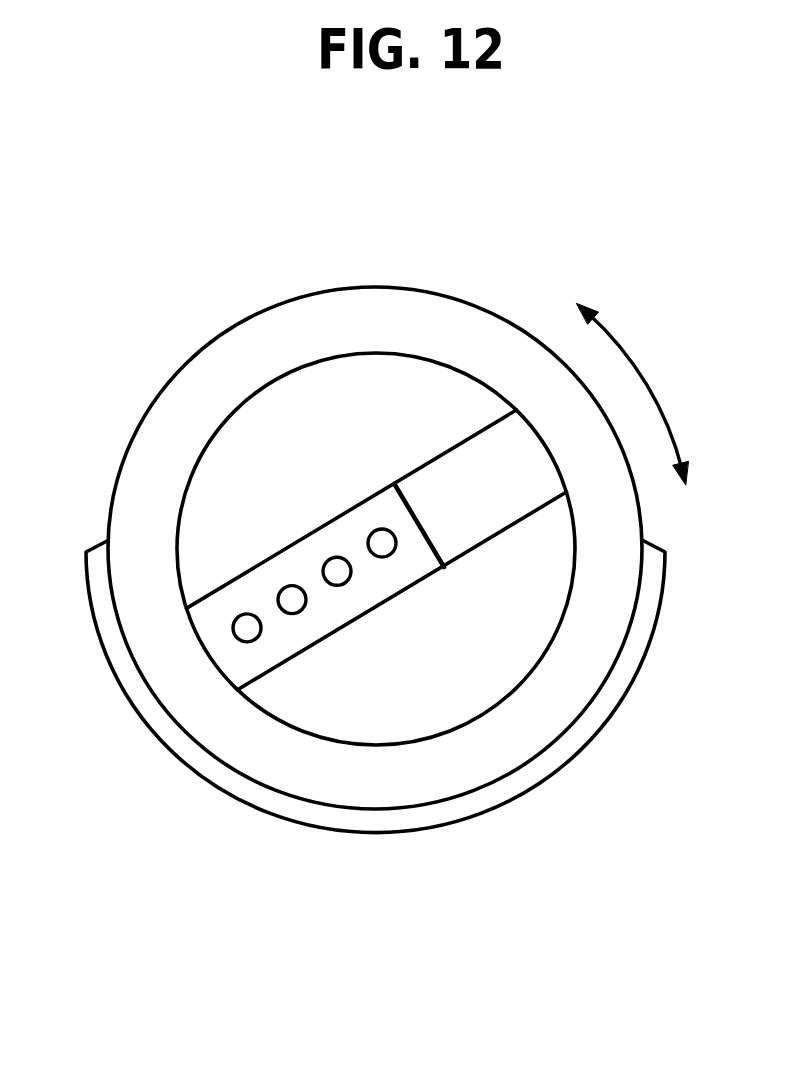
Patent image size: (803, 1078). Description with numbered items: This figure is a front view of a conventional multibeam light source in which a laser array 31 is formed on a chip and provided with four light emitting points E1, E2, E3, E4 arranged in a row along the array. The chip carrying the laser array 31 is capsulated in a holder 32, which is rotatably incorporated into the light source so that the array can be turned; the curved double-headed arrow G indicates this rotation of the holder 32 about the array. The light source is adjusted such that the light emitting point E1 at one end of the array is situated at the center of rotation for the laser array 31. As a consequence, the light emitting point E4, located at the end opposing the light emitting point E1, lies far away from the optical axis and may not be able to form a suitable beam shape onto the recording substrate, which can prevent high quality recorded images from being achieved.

The holder 32 is at (437, 315).
The laser array 31 is at (355, 620).
The light emitting point E1 is at (382, 543).
The light emitting point E2 is at (337, 571).
The light emitting point E3 is at (292, 600).
The light emitting point E4 is at (247, 628).
The rotation direction arrow G is at (633, 393).